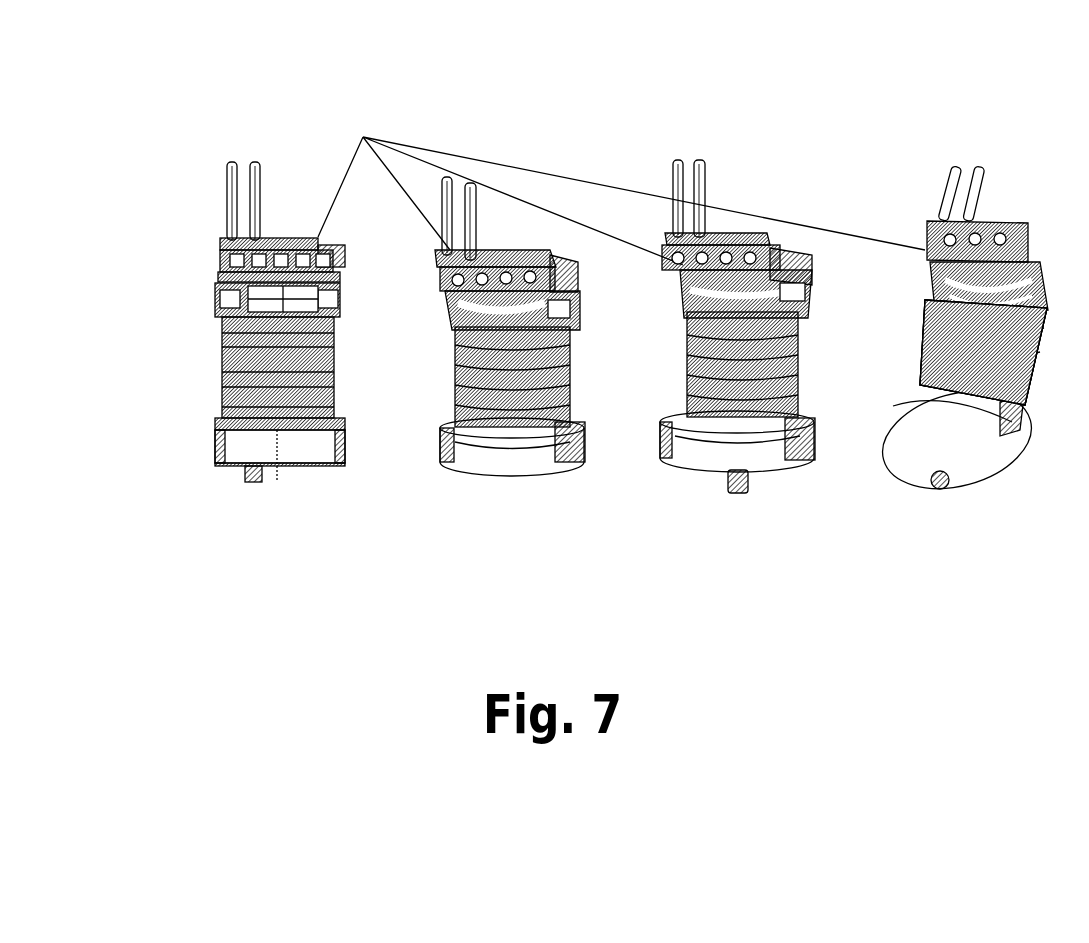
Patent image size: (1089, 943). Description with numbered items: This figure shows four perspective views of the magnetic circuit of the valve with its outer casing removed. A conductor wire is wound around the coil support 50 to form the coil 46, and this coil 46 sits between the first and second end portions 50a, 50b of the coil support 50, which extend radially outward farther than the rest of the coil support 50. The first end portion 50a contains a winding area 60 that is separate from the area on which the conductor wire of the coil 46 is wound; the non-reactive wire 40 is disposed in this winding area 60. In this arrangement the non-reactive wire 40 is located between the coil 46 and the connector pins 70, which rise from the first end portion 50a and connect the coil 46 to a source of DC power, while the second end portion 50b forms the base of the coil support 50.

The connector pins 70 is at (255, 165).
The winding area 60 is at (217, 263).
The non-reactive wire 40 is at (222, 272).
The first end portion 50a is at (215, 303).
The coil support 50 is at (207, 425).
The second end portion 50b is at (245, 443).
The coil 46 is at (918, 350).